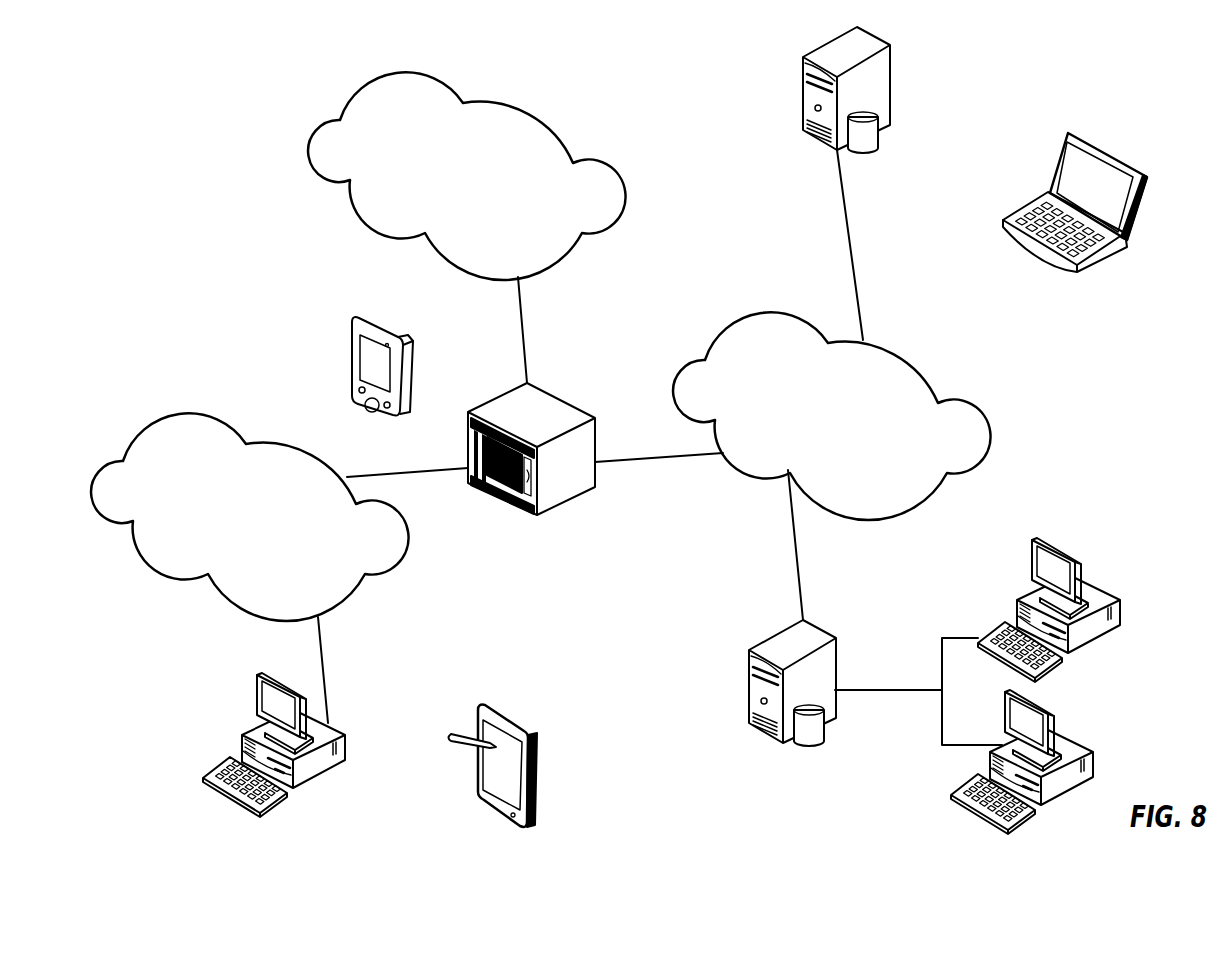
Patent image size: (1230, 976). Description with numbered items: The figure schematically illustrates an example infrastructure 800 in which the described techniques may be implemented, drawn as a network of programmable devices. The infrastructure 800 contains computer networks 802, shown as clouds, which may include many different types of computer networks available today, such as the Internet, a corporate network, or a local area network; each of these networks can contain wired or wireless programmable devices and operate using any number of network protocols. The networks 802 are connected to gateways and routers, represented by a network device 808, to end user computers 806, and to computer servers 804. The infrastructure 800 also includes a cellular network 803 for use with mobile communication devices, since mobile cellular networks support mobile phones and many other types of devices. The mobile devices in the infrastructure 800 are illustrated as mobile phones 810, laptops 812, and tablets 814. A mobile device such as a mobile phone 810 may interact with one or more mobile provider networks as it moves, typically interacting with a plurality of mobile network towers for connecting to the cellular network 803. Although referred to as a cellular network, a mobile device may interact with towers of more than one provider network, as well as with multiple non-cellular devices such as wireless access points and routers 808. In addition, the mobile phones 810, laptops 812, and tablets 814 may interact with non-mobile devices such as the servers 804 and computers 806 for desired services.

The infrastructure 800 is at (1000, 107).
The computer networks 802 is at (233, 430).
The cellular network 803 is at (517, 108).
The computer servers 804 is at (808, 82).
The end user computers 806 is at (343, 735).
The gateways and routers 808 is at (555, 395).
The mobile phones 810 is at (395, 323).
The laptops 812 is at (1117, 160).
The tablets 814 is at (520, 720).